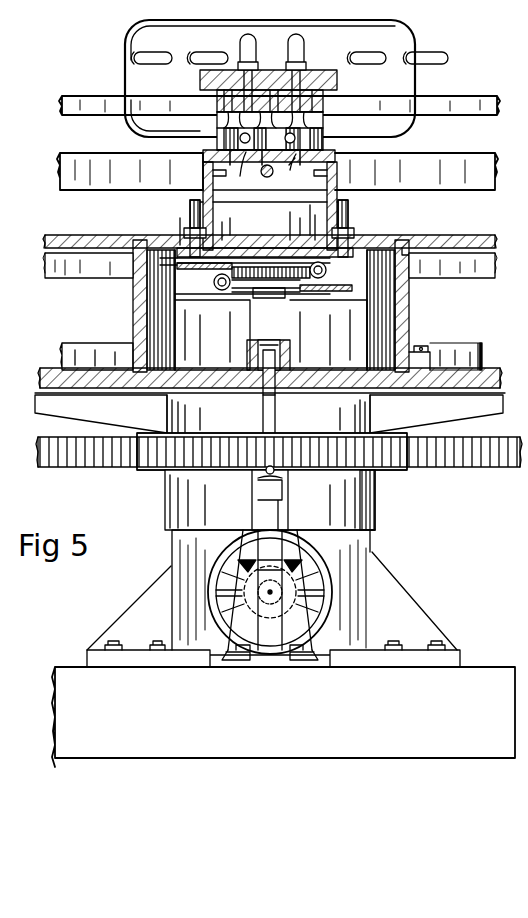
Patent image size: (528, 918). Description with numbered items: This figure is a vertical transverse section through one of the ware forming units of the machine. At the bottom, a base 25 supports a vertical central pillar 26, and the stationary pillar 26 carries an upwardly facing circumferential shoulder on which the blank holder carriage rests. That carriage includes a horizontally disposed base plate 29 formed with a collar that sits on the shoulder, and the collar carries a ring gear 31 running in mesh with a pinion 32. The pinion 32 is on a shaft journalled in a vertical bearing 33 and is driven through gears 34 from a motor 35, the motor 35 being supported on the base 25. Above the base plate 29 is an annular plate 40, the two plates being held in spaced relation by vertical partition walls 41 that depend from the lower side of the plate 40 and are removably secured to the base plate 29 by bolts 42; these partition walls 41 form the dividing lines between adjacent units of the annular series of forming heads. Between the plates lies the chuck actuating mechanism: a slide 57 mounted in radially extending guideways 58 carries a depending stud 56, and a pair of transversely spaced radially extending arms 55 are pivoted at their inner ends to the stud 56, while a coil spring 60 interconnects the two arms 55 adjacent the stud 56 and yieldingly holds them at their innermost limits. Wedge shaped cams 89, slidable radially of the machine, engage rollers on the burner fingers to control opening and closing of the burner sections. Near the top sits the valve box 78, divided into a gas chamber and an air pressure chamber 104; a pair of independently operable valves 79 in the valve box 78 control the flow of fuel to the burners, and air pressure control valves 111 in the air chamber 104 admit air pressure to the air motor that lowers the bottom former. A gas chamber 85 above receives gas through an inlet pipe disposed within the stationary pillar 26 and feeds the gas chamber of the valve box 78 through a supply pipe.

The gas chamber 85 is at (130, 42).
The valve box 78 is at (213, 114).
The air pressure chamber 104 is at (340, 148).
The valves 79 is at (247, 169).
The air pressure control valves 111 is at (283, 172).
The guideways 58 is at (210, 252).
The slide 57 is at (284, 252).
The annular plate 40 is at (452, 240).
The arms 55 is at (172, 285).
The partition walls 41 is at (134, 311).
The bolts 42 is at (424, 352).
The base plate 29 is at (490, 370).
The coil spring 60 is at (262, 288).
The stud 56 is at (283, 293).
The wedge shaped cams 89 is at (316, 350).
The ring gear 31 is at (114, 462).
The pinion 32 is at (292, 463).
The vertical bearing 33 is at (256, 494).
The gears 34 is at (243, 562).
The motor 35 is at (312, 562).
The central pillar 26 is at (370, 552).
The base 25 is at (283, 717).